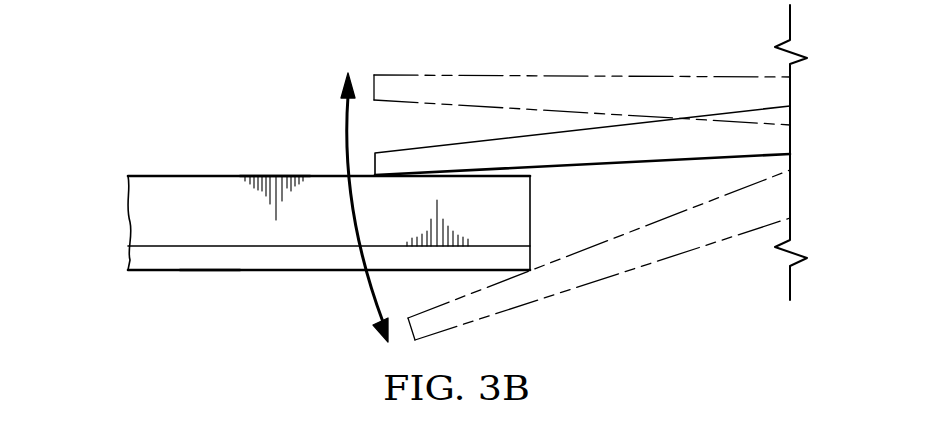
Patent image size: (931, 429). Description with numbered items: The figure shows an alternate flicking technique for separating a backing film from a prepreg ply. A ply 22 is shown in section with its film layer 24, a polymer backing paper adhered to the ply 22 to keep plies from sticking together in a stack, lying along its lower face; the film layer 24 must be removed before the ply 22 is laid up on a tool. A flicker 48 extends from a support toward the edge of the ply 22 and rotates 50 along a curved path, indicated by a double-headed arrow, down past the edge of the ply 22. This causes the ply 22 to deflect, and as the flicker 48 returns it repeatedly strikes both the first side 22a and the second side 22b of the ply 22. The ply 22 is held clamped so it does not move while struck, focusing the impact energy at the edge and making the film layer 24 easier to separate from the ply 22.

The ply 22 is at (130, 212).
The first side of the ply 22a is at (210, 176).
The second side of the ply 22b is at (212, 270).
The film layer 24 is at (127, 257).
The flicker 48 is at (597, 155).
The rotation of the flicker 50 is at (347, 135).